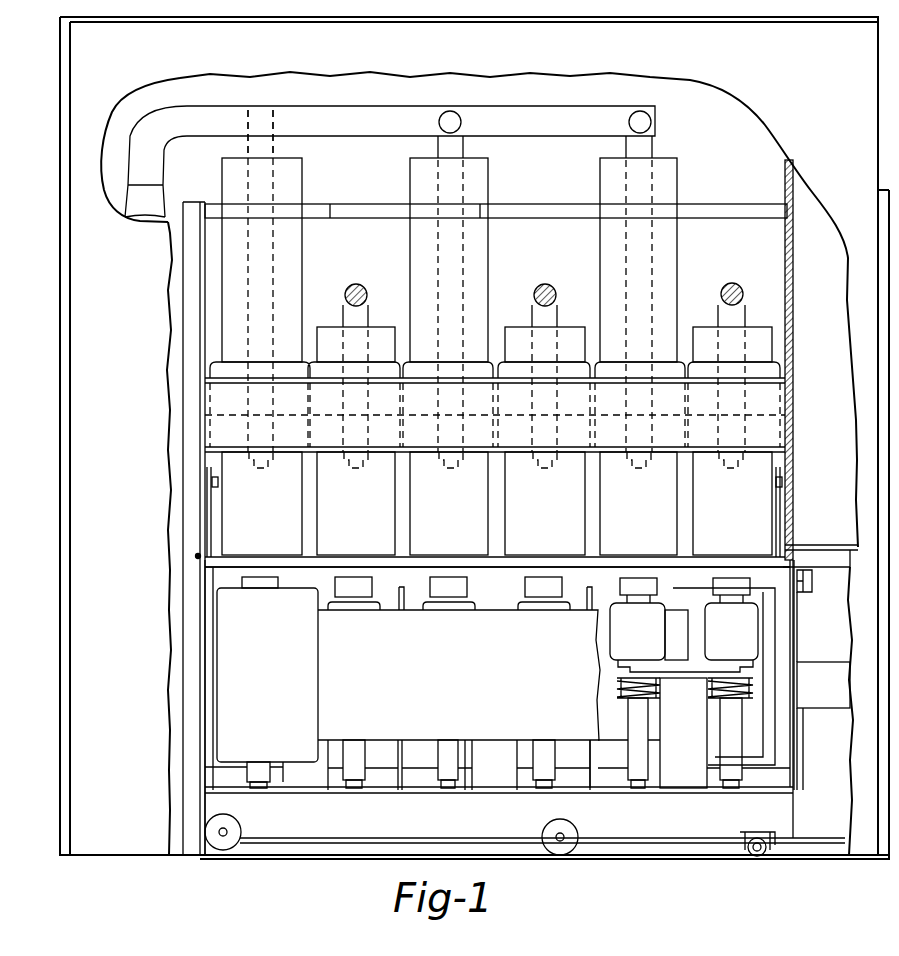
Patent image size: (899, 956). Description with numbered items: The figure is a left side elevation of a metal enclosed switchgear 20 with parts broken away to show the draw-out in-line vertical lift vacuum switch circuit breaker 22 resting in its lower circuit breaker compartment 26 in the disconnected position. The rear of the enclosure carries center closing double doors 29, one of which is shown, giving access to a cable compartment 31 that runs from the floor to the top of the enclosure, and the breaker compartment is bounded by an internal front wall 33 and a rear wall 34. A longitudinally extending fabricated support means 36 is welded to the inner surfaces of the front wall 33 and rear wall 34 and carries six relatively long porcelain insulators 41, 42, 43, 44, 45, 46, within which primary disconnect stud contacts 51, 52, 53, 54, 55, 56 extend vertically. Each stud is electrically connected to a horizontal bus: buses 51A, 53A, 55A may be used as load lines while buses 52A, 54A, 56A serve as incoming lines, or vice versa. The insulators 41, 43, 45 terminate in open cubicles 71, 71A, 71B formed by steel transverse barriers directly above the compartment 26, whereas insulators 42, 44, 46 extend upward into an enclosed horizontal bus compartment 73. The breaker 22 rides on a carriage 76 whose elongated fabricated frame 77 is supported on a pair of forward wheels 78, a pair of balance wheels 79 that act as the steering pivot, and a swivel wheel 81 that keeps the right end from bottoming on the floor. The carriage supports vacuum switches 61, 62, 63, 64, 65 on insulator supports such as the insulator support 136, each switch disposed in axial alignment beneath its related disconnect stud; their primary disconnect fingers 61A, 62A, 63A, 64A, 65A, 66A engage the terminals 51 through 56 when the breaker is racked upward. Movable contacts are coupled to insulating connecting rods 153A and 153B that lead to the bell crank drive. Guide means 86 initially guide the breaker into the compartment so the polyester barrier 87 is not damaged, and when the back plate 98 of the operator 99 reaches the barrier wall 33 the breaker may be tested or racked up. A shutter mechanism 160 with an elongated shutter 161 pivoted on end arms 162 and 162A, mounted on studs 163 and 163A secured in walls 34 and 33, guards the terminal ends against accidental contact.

The metal enclosed switchgear 20 is at (128, 858).
The in-line vertical lift vacuum switch circuit breaker 22 is at (366, 824).
The lower circuit breaker compartment 26 is at (212, 583).
The center closing double doors 29 is at (62, 378).
The cable compartment 31 is at (172, 424).
The internal wall 33 is at (790, 352).
The rear wall 34 is at (203, 283).
The fabricated support means 36 is at (762, 437).
The porcelain insulator 41 is at (740, 540).
The porcelain insulator 42 is at (647, 540).
The porcelain insulator 43 is at (553, 540).
The porcelain insulator 44 is at (460, 540).
The porcelain insulator 45 is at (363, 540).
The porcelain insulator 46 is at (273, 540).
The primary disconnect stud contact 51 is at (729, 470).
The primary disconnect stud contact 52 is at (637, 470).
The primary disconnect stud contact 53 is at (543, 470).
The primary disconnect stud contact 54 is at (449, 470).
The primary disconnect stud contact 55 is at (354, 470).
The primary disconnect stud contact 56 is at (259, 470).
The bus 51A is at (737, 287).
The load bus 52A is at (652, 148).
The bus 53A is at (550, 284).
The load bus 54A is at (462, 152).
The bus 55A is at (365, 284).
The load bus 56A is at (274, 150).
The vacuum switch 61 is at (743, 654).
The vacuum switch 62 is at (647, 654).
The vacuum switch 63 is at (535, 605).
The vacuum switch 64 is at (442, 605).
The vacuum switch 65 is at (347, 605).
The primary disconnect finger 61A is at (730, 595).
The primary disconnect finger 62A is at (636, 595).
The primary disconnect finger 63A is at (540, 590).
The primary disconnect finger 64A is at (445, 590).
The primary disconnect finger 65A is at (350, 590).
The primary disconnect finger 66A is at (260, 588).
The open cubicle 71 is at (767, 298).
The open cubicle 71A is at (508, 230).
The open cubicle 71B is at (333, 230).
The enclosed horizontal bus compartment 73 is at (745, 145).
The carriage 76 is at (668, 840).
The frame 77 is at (610, 845).
The forward wheels 78 is at (221, 849).
The balance wheels 79 is at (556, 855).
The swivel wheel 81 is at (762, 856).
The guide means 86 is at (240, 788).
The polyester barrier 87 is at (222, 677).
The back plate 98 is at (795, 662).
The operator 99 is at (832, 805).
The insulator support 136 is at (700, 737).
The insulating connecting rod 153A is at (732, 786).
The insulating connecting rod 153B is at (648, 786).
The shutter mechanism 160 is at (196, 556).
The elongated shutter 161 is at (517, 597).
The end arm 162 is at (208, 512).
The end arm 162A is at (780, 525).
The stud 163 is at (218, 483).
The stud 163A is at (786, 485).